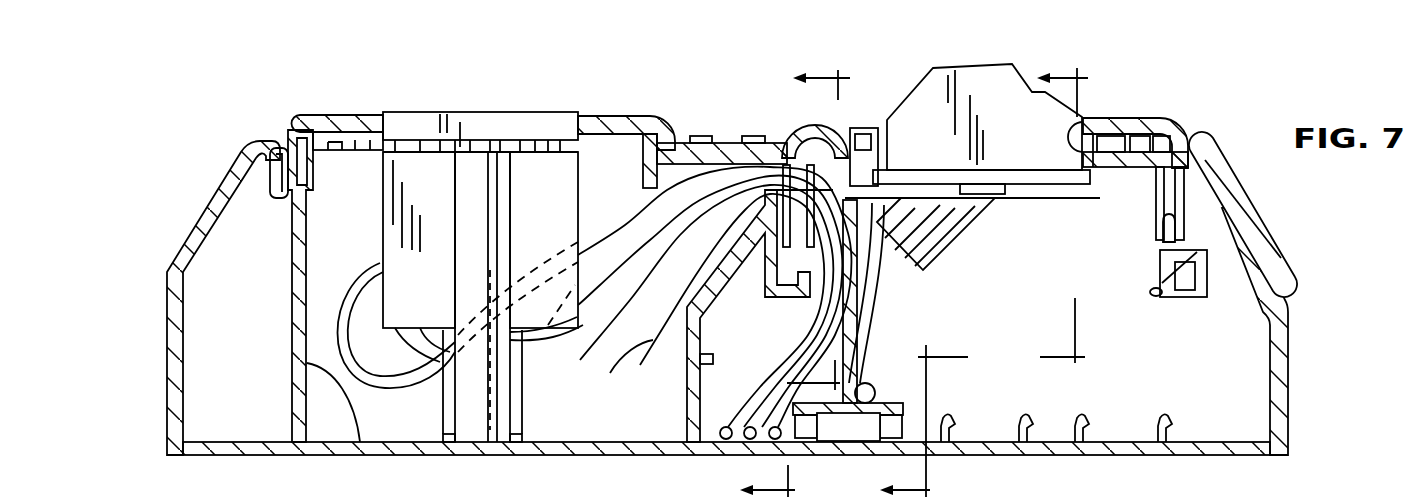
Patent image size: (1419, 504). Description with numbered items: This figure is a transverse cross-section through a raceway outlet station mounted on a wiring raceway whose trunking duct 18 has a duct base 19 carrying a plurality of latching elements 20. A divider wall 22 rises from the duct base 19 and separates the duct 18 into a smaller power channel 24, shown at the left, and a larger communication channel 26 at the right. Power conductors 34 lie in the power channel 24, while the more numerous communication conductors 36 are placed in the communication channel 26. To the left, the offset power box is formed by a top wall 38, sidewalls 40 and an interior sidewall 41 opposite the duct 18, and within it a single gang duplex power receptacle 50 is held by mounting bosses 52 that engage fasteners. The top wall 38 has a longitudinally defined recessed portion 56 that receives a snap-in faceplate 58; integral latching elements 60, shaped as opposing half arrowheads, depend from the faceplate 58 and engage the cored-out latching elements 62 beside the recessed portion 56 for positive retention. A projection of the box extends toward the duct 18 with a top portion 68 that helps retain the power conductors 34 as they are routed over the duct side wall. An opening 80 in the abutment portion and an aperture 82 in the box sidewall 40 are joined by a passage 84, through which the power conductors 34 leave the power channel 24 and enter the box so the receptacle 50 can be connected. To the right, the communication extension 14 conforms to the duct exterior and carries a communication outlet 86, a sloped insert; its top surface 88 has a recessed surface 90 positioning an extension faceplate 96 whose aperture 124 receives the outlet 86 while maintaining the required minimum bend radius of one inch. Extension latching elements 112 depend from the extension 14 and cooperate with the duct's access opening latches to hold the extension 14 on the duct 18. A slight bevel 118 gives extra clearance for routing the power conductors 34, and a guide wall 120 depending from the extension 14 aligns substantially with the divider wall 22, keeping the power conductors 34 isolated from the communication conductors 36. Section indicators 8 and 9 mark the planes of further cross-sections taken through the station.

The section line 8- 8 is at (784, 283).
The section line 9- 9 is at (984, 282).
The communication extension 14 is at (1228, 140).
The trunking duct 18 is at (1302, 321).
The duct base 19 is at (1140, 453).
The latching elements 20 is at (1168, 231).
The divider wall 22 is at (852, 263).
The power channel 24 is at (733, 363).
The communication channel 26 is at (1200, 378).
The power conductors 34 is at (620, 248).
The communication conductors 36 is at (878, 317).
The top wall 38 is at (350, 140).
The sidewalls 40 is at (167, 318).
The interior sidewall 41 is at (345, 390).
The single gang duplex power receptacle 50 is at (493, 130).
The mounting bosses 52 is at (477, 220).
The recessed portion 56 is at (683, 143).
The faceplate 58 is at (598, 118).
The latching elements 60 is at (395, 148).
The cored-out latching elements 62 is at (267, 137).
The top portion 68 is at (733, 140).
The opening 80 is at (757, 140).
The aperture 82 is at (620, 372).
The passage 84 is at (703, 140).
The communication outlet 86 is at (1047, 149).
The top surface 88 is at (1201, 113).
The recessed surface 90 is at (887, 112).
The extension faceplate 96 is at (1150, 122).
The extension latching elements 112 is at (1152, 247).
The bevel 118 is at (833, 140).
The guide wall 120 is at (903, 198).
The aperture 124 is at (1085, 122).